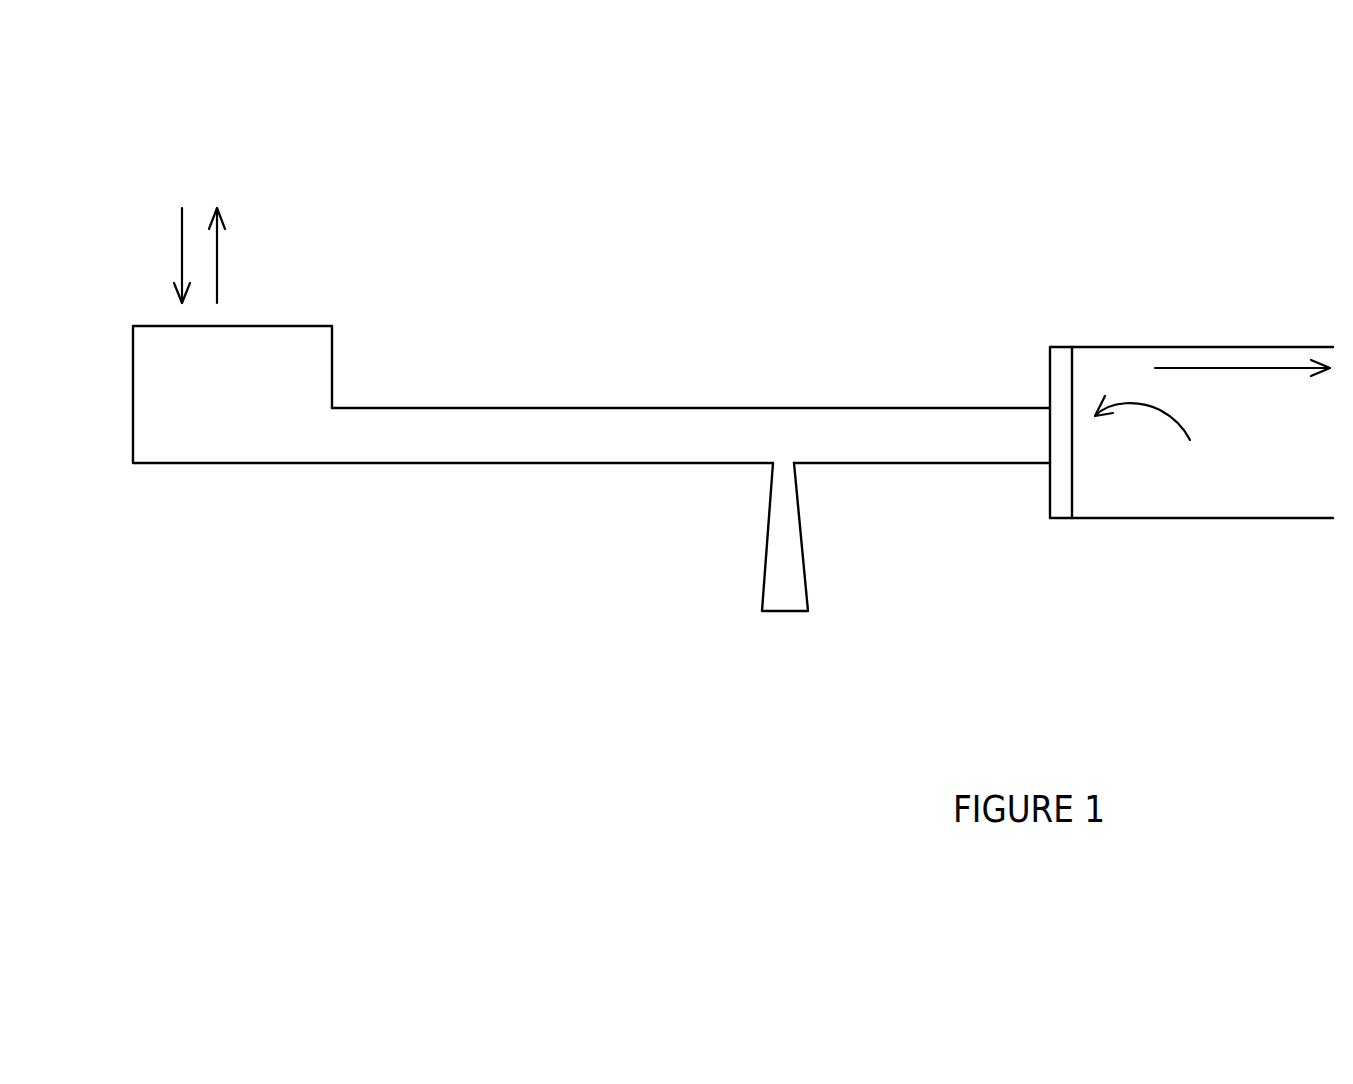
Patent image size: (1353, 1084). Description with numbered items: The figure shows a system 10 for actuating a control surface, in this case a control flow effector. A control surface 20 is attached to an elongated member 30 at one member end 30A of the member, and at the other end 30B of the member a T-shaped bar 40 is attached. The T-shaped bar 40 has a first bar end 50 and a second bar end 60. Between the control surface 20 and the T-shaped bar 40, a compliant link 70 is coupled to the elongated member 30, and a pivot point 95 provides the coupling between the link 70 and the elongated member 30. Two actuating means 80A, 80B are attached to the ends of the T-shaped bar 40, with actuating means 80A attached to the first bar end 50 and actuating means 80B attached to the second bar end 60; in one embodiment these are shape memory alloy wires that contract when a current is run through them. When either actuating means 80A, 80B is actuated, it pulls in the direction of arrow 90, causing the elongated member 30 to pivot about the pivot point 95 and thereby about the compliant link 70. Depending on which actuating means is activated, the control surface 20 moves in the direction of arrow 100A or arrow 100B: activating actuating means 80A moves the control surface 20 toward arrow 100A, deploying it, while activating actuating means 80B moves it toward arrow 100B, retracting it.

The system 10 is at (481, 245).
The control surface 20 is at (133, 383).
The elongated member 30 is at (563, 408).
The member end 30A is at (333, 407).
The other end 30B is at (1048, 404).
The T-shaped bar 40 is at (1157, 425).
The first bar end 50 is at (1048, 372).
The second bar end 60 is at (1052, 495).
The compliant link 70 is at (763, 563).
The actuating means 80A is at (1153, 347).
The actuating means 80B is at (1187, 518).
The arrow 90 is at (1235, 370).
The pivot point 95 is at (797, 465).
The arrow 100A is at (217, 258).
The arrow 100B is at (180, 245).